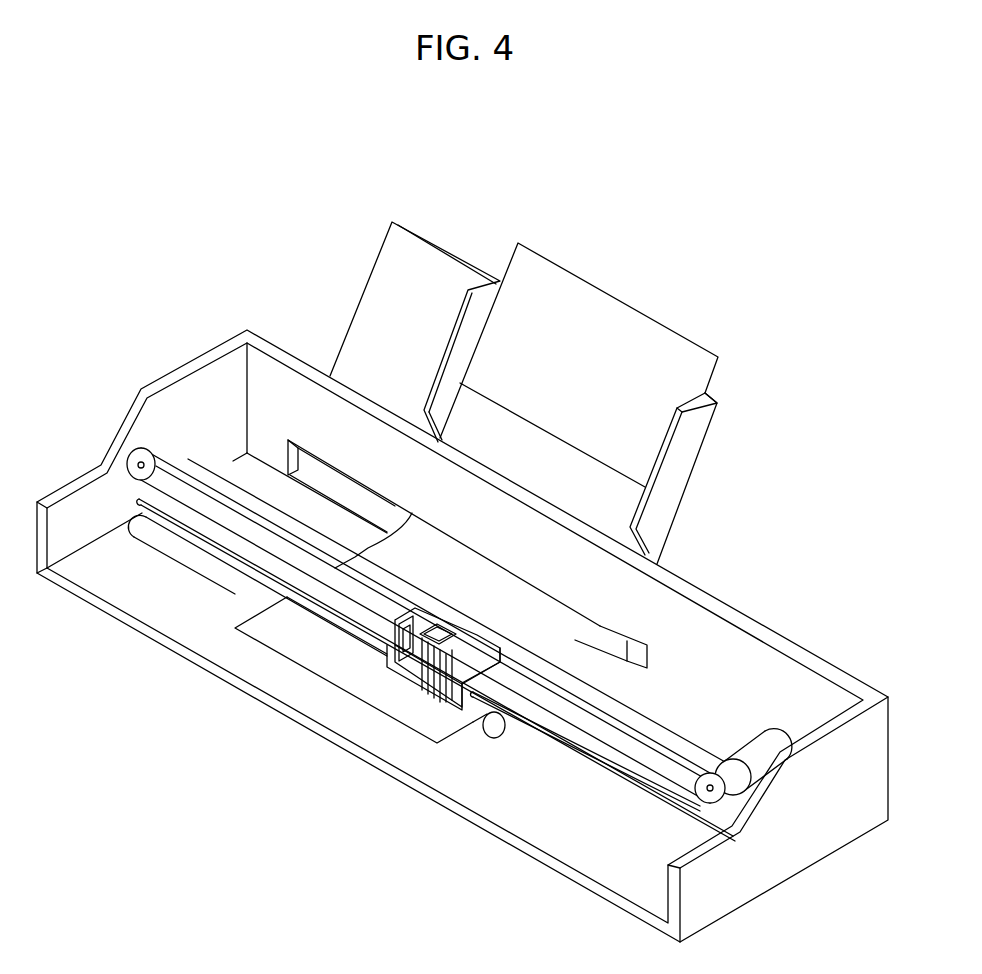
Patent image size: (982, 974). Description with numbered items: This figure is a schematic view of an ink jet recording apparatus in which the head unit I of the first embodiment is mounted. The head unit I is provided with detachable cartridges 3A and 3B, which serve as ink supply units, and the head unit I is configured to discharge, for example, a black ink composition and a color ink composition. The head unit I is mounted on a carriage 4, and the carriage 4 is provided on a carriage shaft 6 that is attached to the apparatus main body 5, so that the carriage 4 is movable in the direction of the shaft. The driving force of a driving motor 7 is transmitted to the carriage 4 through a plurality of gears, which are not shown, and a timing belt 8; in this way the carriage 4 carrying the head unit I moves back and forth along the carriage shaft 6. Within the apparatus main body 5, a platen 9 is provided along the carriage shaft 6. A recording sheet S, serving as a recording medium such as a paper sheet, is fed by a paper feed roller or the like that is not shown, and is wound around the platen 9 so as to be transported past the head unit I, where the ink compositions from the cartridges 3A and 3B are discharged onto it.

The apparatus main body 5 is at (708, 603).
The recording sheet S is at (527, 453).
The platen 9 is at (220, 568).
The timing belt 8 is at (180, 468).
The driving motor 7 is at (763, 750).
The carriage shaft 6 is at (150, 512).
The carriage 4 is at (497, 680).
The cartridge 3A is at (423, 615).
The cartridge 3B is at (453, 628).
The head unit I is at (385, 679).